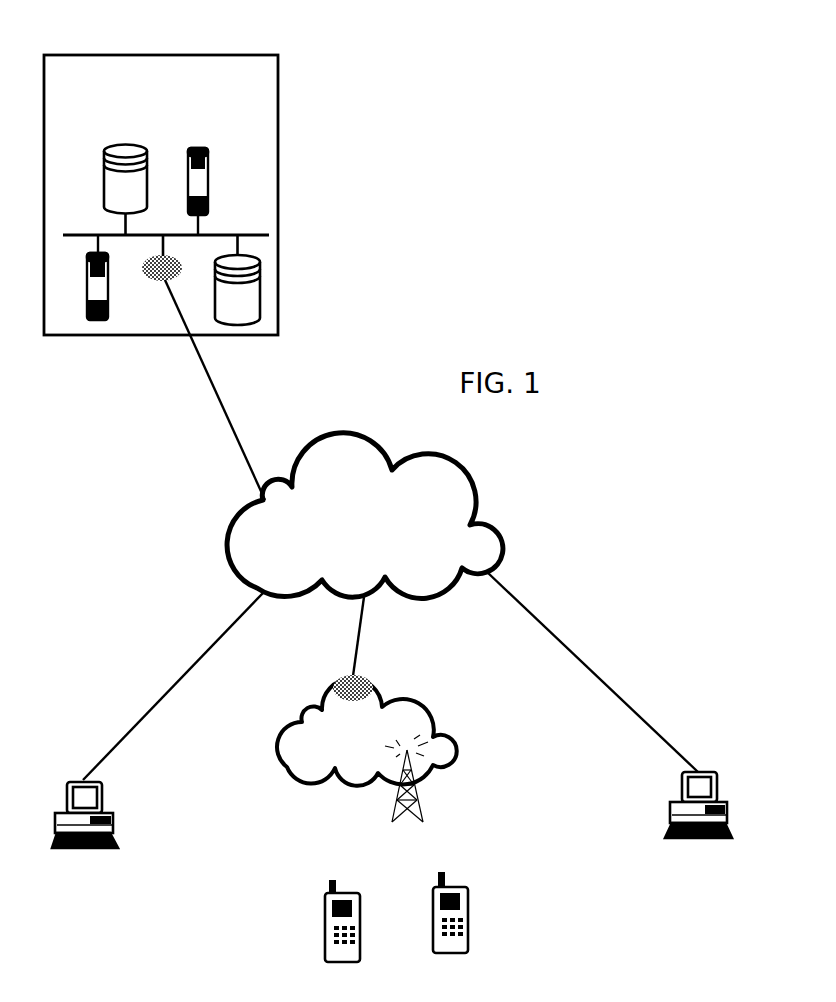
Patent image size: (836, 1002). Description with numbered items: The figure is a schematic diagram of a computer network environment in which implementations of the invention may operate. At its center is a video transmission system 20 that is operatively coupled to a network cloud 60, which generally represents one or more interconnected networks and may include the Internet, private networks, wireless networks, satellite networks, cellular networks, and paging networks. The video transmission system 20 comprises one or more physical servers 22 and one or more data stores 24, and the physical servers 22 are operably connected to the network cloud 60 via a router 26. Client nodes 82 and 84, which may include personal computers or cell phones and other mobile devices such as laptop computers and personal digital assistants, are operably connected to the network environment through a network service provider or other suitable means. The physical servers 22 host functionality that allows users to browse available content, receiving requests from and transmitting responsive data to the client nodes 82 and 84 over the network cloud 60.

The video transmission system 20 is at (279, 125).
The physical server 22 is at (208, 180).
The data store 24 is at (104, 178).
The router 26 is at (148, 270).
The network cloud 60 is at (242, 672).
The client node 82 is at (55, 818).
The client node 84 is at (320, 925).